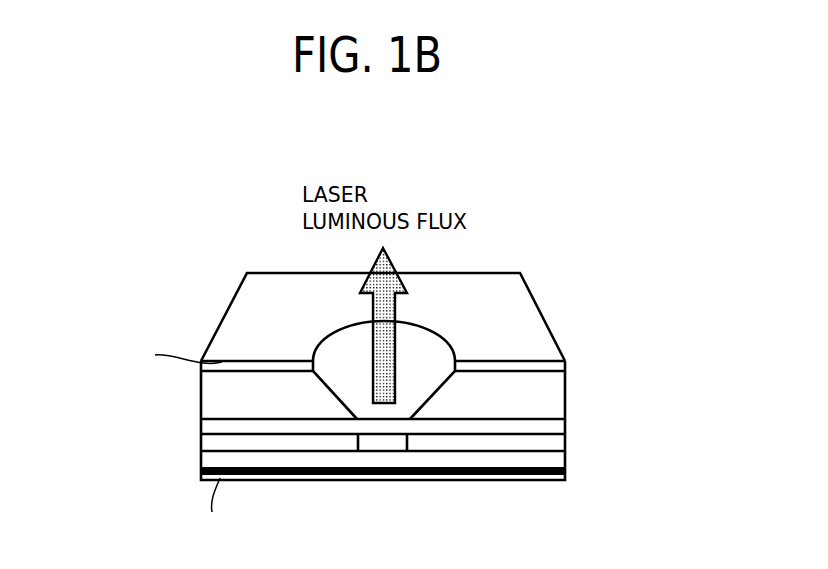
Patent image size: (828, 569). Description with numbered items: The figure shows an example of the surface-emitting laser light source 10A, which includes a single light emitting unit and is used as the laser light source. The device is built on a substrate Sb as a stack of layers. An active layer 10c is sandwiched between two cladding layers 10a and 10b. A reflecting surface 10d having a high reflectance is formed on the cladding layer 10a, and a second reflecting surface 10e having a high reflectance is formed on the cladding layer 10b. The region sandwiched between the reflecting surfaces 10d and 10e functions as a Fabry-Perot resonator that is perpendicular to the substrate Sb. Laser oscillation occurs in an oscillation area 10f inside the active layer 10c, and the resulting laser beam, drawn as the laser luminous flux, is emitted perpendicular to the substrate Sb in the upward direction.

The surface-emitting laser light source 10A is at (238, 238).
The reflecting surface 10d is at (500, 321).
The cladding layer 10a is at (548, 428).
The active layer 10c is at (548, 445).
The cladding layer 10b is at (548, 460).
The reflecting surface 10e is at (548, 472).
The oscillation area 10f is at (385, 447).
The substrate Sb is at (230, 398).